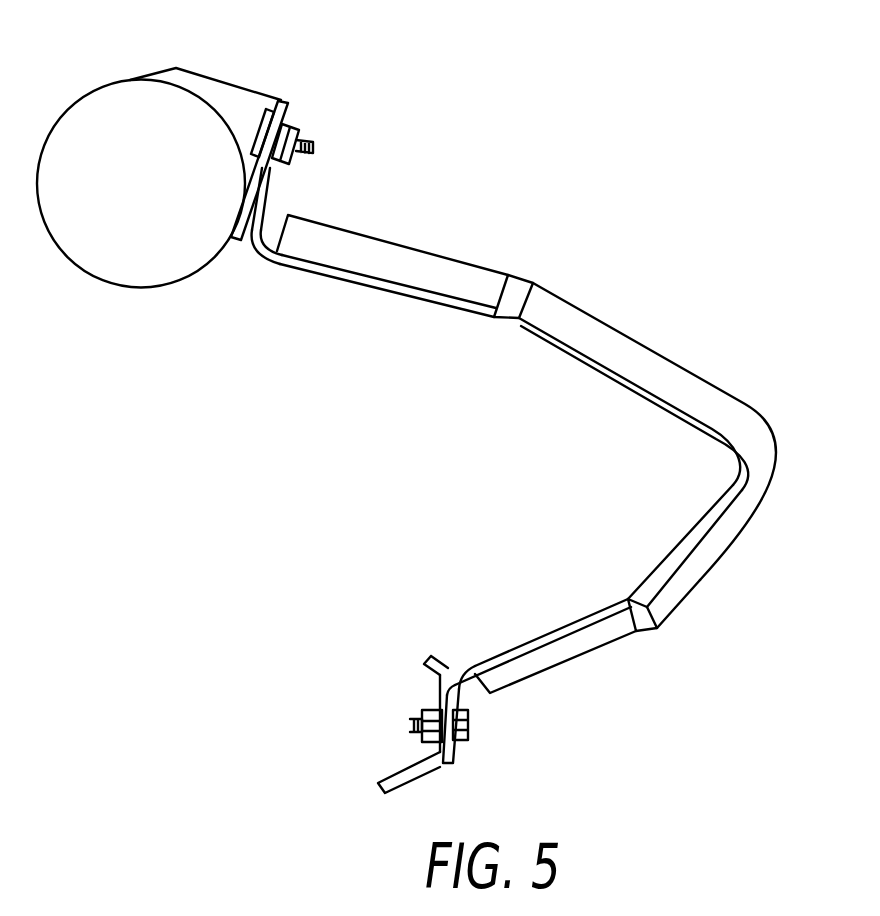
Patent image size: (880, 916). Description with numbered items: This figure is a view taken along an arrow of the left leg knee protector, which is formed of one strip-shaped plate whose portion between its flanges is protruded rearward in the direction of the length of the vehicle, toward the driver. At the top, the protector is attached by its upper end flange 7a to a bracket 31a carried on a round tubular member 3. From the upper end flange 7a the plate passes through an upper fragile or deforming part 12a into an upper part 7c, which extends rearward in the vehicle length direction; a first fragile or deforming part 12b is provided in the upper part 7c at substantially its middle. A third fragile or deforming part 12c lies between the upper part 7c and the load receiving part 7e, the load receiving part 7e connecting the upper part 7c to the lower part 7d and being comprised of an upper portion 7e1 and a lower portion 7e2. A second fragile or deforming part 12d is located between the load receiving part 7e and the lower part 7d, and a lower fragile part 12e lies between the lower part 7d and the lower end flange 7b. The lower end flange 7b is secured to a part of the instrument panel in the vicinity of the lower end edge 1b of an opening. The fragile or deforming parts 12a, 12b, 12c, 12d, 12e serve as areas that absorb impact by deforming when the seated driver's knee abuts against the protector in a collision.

The pipe (tubular member) 3 is at (78, 103).
The bracket on pipe 31a is at (213, 79).
The upper end flange 7a is at (270, 182).
The upper fragile or deforming part 12a is at (255, 247).
The upper part 7c is at (570, 303).
The first fragile or deforming part 12b is at (503, 327).
The load receiving part 7e is at (687, 458).
The upper portion 7e1 is at (767, 487).
The lower portion 7e2 is at (684, 598).
The third fragile or deforming part 12c is at (727, 461).
The second fragile or deforming part 12d is at (625, 597).
The lower part 7d is at (582, 656).
The lower fragile part 12e is at (460, 665).
The lower end flange 7b is at (456, 752).
The lower end edge 1b is at (440, 692).